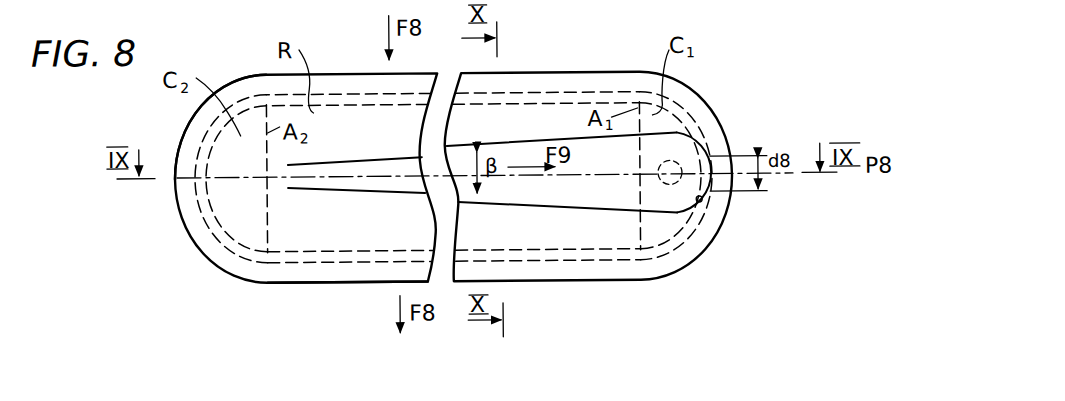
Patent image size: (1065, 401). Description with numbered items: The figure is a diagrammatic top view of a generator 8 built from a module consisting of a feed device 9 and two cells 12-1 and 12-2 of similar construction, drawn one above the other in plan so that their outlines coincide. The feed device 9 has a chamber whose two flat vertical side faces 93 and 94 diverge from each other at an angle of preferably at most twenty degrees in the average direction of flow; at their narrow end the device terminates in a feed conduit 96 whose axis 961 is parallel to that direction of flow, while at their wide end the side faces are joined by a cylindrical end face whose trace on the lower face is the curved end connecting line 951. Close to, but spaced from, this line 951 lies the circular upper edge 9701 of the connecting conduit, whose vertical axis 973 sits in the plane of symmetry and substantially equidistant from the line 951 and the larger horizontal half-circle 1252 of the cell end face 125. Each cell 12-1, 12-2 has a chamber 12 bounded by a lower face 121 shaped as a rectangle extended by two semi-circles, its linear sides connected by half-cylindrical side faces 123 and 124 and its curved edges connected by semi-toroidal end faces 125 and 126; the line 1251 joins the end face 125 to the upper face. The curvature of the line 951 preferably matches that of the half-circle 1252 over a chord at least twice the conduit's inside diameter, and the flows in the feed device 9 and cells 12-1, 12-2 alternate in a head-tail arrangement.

The generator 8 is at (479, 181).
The chamber 12 is at (577, 73).
The cell 12-1 is at (233, 270).
The cell 12-2 is at (272, 280).
The lower face 121 is at (513, 117).
The side face 123 is at (298, 248).
The side face 124 is at (405, 97).
The end face 125 is at (661, 255).
The end face 126 is at (210, 209).
The line 1251 is at (697, 134).
The larger horizontal half-circle 1252 is at (687, 117).
The feed device 9 is at (531, 170).
The side face 93 is at (565, 207).
The side face 94 is at (586, 135).
The feed conduit 96 is at (305, 164).
The axis 961 is at (326, 181).
The vertical axis 973 is at (688, 159).
The circular upper edge 9701 is at (688, 153).
The curved line 951 is at (702, 202).